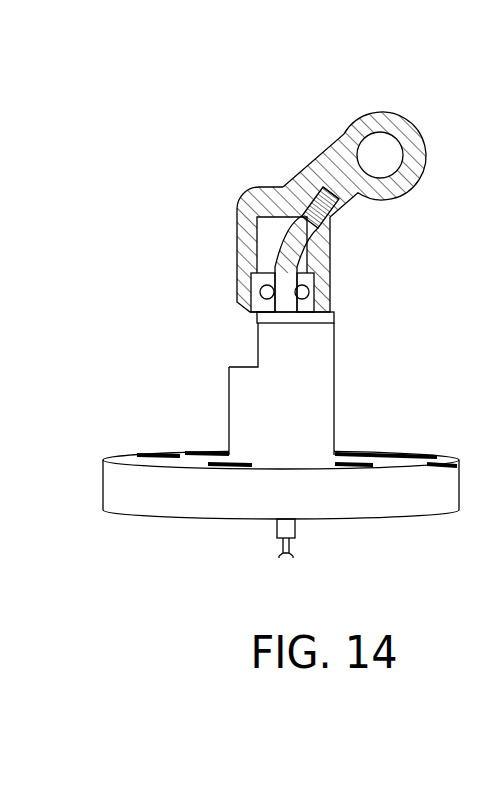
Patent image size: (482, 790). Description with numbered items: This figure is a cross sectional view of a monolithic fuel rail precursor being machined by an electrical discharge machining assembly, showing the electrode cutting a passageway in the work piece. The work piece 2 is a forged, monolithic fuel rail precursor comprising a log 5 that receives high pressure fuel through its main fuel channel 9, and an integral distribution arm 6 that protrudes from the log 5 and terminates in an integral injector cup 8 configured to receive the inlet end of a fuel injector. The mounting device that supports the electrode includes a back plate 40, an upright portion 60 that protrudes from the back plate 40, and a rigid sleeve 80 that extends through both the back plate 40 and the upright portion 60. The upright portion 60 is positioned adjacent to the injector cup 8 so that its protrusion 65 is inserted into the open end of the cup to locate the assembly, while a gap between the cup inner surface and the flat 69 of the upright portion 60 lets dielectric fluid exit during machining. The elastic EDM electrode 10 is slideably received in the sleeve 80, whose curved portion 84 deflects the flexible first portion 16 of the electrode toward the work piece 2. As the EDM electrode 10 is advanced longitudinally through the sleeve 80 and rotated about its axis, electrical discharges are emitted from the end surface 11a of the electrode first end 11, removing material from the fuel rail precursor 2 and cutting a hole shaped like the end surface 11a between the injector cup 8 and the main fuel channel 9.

The work piece 2 is at (248, 207).
The log 5 is at (425, 158).
The distribution arm 6 is at (302, 181).
The injector cup 8 is at (251, 276).
The main fuel channel 9 is at (384, 152).
The EDM electrode 10 is at (297, 542).
The electrode first end 11 is at (356, 223).
The end surface 11a is at (331, 198).
The first portion 16 is at (333, 203).
The back plate 40 is at (456, 503).
The upright portion 60 is at (318, 401).
The protrusion 65 is at (314, 318).
The flat 69 is at (257, 349).
The sleeve 80 is at (277, 530).
The curved portion 84 is at (261, 236).